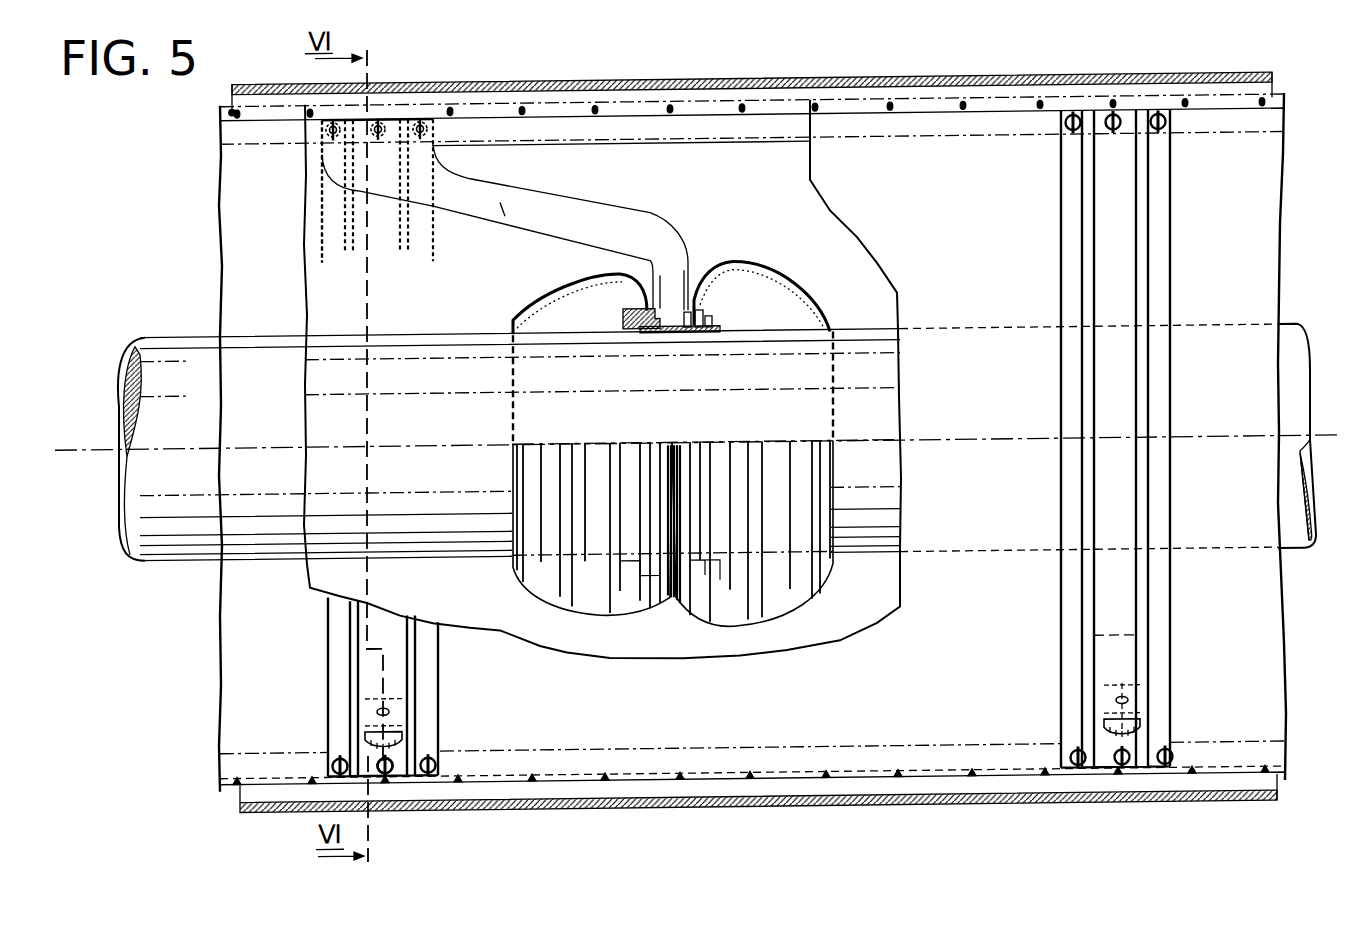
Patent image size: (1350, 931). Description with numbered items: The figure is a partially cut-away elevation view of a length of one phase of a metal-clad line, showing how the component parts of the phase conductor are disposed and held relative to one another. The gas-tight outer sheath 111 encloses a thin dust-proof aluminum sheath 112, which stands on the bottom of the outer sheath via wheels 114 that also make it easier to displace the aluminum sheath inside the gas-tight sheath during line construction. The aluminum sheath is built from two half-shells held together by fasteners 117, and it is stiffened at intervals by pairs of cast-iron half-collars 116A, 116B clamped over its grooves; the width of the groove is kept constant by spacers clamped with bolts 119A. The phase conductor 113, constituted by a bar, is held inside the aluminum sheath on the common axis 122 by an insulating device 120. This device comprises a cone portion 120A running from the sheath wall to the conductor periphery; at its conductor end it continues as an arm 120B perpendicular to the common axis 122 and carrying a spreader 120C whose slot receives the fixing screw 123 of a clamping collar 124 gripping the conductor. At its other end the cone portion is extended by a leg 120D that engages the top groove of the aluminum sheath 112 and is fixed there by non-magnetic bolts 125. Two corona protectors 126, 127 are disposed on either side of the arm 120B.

The gas-tight outer sheath 111 is at (733, 80).
The aluminum sheath 112 is at (922, 184).
The phase conductor 113 is at (172, 358).
The wheels 114 is at (378, 736).
The half-collar 116A is at (350, 668).
The half-collar 116B is at (322, 205).
The fasteners 117 is at (1113, 104).
The bolts 119A is at (418, 771).
The insulating device 120 is at (550, 175).
The cone portion 120A is at (500, 200).
The arm 120B is at (674, 283).
The spreader 120C is at (668, 333).
The leg 120D is at (378, 178).
The common axis 122 is at (76, 442).
The fixing screw 123 is at (706, 312).
The clamping collar 124 is at (626, 318).
The bolts 125 is at (421, 120).
The corona protector 126 is at (578, 272).
The corona protector 127 is at (764, 264).